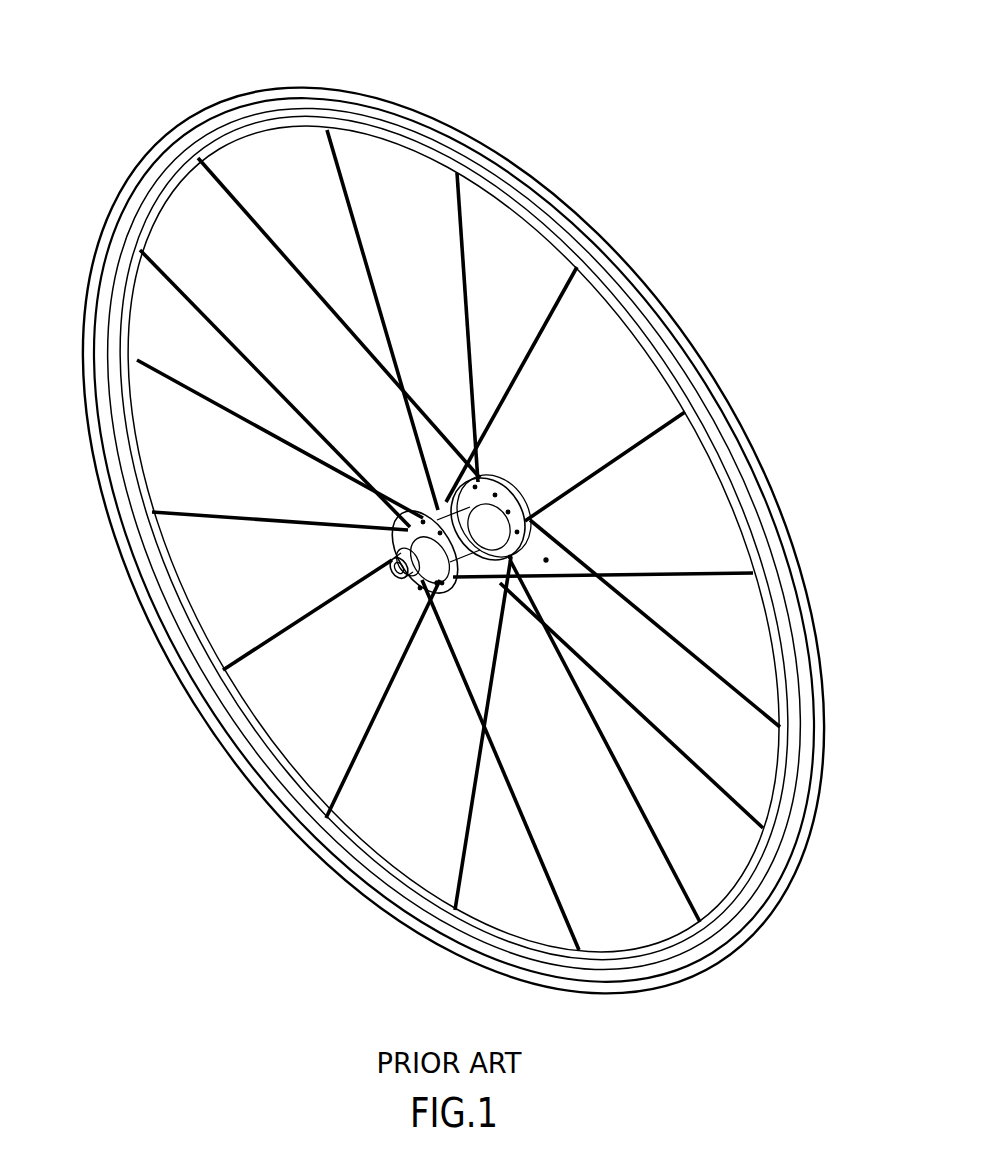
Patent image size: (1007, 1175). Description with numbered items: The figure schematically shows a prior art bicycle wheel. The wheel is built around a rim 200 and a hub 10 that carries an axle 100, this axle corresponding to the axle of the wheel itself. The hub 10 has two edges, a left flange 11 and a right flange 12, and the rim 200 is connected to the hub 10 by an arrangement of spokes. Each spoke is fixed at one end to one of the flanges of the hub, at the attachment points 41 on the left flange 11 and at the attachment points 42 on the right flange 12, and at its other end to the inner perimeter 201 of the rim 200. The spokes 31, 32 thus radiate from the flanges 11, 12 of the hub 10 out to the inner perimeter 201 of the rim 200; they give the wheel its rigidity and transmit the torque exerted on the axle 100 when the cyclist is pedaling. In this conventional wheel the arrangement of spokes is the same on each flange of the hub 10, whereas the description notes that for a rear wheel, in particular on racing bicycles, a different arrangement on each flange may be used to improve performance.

The rim 200 is at (436, 117).
The inner perimeter of rim 201 is at (568, 210).
The first spokes 31 is at (357, 232).
The second spokes 32 is at (337, 321).
The hub 10 is at (465, 526).
The left flange of the hub 11 is at (398, 512).
The right flange of the hub 12 is at (510, 490).
The attachment points on left flange vanes 41 is at (548, 562).
The attachment points on right flange vanes 42 is at (437, 600).
The axle 100 is at (392, 567).